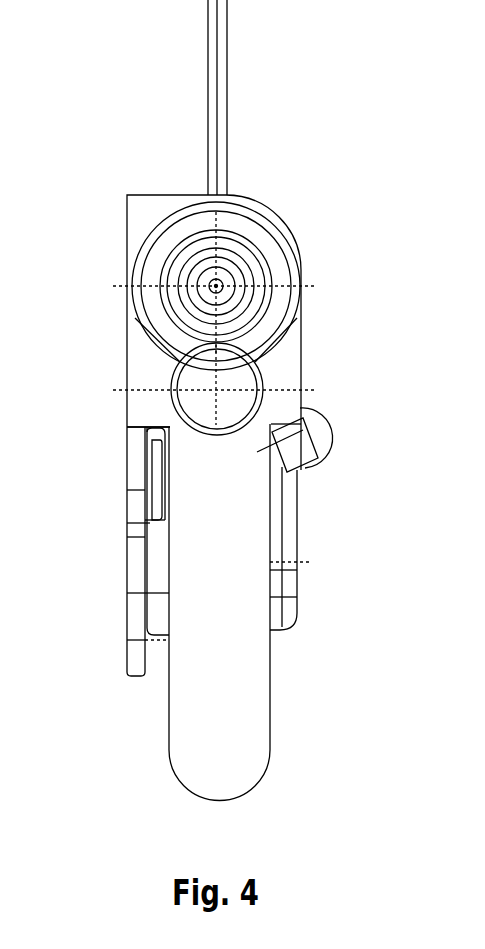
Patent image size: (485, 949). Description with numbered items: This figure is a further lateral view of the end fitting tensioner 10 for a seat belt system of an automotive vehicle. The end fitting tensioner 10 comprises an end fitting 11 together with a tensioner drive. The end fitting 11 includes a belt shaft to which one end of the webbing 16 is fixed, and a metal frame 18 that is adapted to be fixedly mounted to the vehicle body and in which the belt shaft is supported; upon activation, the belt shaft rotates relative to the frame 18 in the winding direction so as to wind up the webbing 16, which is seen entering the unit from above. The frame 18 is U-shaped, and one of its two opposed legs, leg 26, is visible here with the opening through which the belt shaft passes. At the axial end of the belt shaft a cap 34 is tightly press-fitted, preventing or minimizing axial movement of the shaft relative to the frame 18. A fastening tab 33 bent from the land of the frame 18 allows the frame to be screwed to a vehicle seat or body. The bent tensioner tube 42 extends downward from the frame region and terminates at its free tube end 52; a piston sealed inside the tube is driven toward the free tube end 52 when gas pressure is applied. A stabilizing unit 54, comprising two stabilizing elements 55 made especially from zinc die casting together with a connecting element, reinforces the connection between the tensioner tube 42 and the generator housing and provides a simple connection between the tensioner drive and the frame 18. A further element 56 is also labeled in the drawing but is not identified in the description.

The end fitting tensioner 10 is at (178, 223).
The webbing 16 is at (227, 108).
The leg 26 is at (137, 217).
The cap 34 is at (277, 273).
The frame 18 is at (145, 373).
The free tube end 52 is at (248, 381).
The end fitting 11 is at (162, 452).
The tensioner tube 42 is at (250, 722).
The fastening tab 33 is at (127, 630).
The left clip 56 is at (150, 563).
The stabilizing element 55 is at (150, 523).
The stabilizing unit 54 is at (333, 546).